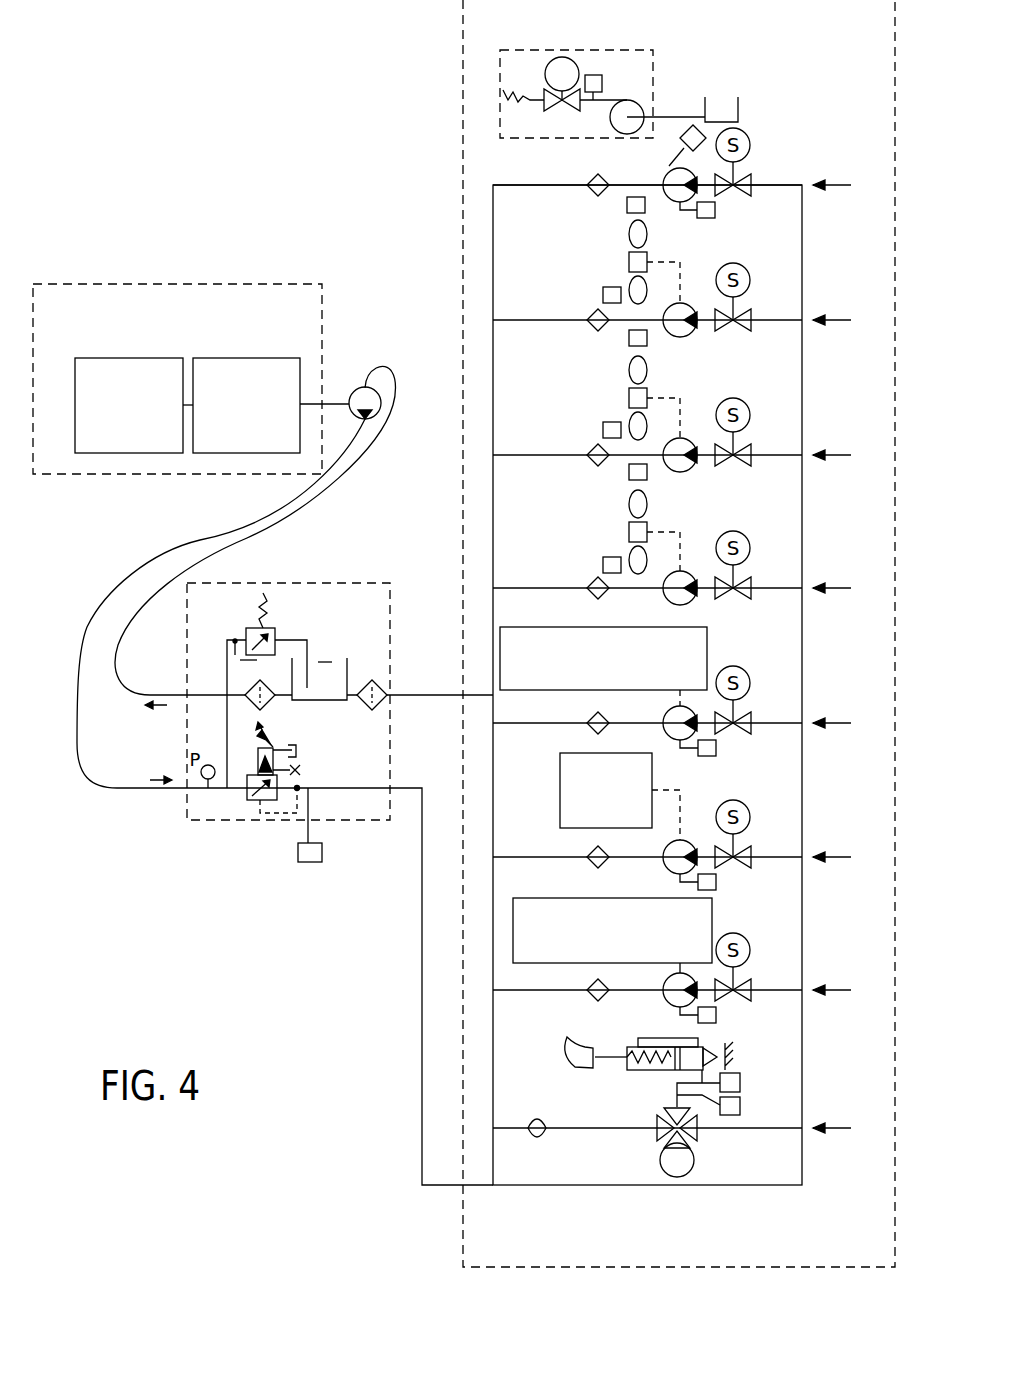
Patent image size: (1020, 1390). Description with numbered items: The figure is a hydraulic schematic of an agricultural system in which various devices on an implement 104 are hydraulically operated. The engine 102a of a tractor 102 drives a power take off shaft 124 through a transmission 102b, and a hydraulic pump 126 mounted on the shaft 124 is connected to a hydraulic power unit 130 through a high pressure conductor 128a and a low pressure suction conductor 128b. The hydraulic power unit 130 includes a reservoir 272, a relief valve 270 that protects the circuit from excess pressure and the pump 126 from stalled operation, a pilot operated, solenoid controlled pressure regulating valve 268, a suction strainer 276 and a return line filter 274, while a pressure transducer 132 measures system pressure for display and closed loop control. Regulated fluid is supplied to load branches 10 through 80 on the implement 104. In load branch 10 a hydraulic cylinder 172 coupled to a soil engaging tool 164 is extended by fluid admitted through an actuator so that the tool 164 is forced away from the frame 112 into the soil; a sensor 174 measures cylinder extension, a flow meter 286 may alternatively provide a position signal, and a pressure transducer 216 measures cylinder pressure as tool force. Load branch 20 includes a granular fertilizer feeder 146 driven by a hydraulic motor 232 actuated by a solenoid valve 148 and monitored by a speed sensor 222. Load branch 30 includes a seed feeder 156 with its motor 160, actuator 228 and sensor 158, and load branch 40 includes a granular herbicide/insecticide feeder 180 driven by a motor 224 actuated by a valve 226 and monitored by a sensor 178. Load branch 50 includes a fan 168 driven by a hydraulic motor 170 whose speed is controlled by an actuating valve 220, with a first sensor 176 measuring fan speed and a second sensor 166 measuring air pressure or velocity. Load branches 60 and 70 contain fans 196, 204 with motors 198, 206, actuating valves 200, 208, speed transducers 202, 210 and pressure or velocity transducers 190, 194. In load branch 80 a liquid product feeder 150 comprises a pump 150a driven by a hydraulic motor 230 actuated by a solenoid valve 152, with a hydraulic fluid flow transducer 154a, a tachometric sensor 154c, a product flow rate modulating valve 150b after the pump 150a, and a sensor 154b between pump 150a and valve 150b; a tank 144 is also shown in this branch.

The load branch 10 is at (692, 1128).
The load branch 20 is at (690, 991).
The load branch 30 is at (690, 858).
The load branch 40 is at (690, 724).
The load branch 50 is at (690, 589).
The load branch 60 is at (690, 456).
The load branch 70 is at (690, 321).
The load branch 80 is at (690, 186).
The tractor 102 is at (158, 334).
The engine 102a is at (105, 358).
The transmission 102b is at (253, 358).
The implement 104 is at (462, 1237).
The frame 112 is at (729, 1054).
The power take off (PTO) shaft 124 is at (333, 402).
The hydraulic pump 126 is at (352, 388).
The high pressure (output) conductor 128a is at (148, 553).
The low pressure (input, or suction) conductor 128b is at (248, 537).
The hydraulic power unit (HPU) 130 is at (390, 597).
The pressure transducer 132 is at (297, 852).
The reservoir 144 is at (740, 108).
The granular fertilizer feeder 146 is at (712, 930).
The solenoid valve 148 is at (750, 987).
The liquid product feeder 150 is at (583, 48).
The pump 150a is at (612, 131).
The product flow rate modulating valve 150b is at (548, 62).
The solenoid valve 152 is at (750, 184).
The hydraulic fluid flow transducer 154a is at (715, 210).
The sensor 154b is at (603, 85).
The tachometric sensor 154c is at (681, 143).
The seed feeder 156 is at (560, 790).
The sensor 158 is at (717, 882).
The motor 160 is at (668, 848).
The soil engaging tool 164 is at (568, 1060).
The second sensor 166 is at (603, 565).
The fan 168 is at (628, 503).
The hydraulic motor 170 is at (693, 572).
The hydraulic cylinder 172 is at (653, 1072).
The sensor 174 is at (668, 1038).
The first sensor 176 is at (648, 475).
The sensor 178 is at (717, 748).
The granular herbicide/insecticide feeder 180 is at (707, 657).
The pressure or velocity transducer 190 is at (603, 430).
The pressure or velocity transducer 194 is at (603, 295).
The fan 196 is at (628, 368).
The motor 198 is at (693, 438).
The actuating valve 200 is at (750, 452).
The speed transducer 202 is at (648, 340).
The fan 204 is at (628, 233).
The motor 206 is at (693, 303).
The actuating valve 208 is at (750, 317).
The speed transducer 210 is at (627, 205).
The sensor 216 is at (740, 1078).
The actuating valve 220 is at (750, 585).
The sensor 222 is at (717, 1015).
The motor 224 is at (667, 711).
The valve 226 is at (750, 720).
The actuator 228 is at (750, 855).
The hydraulic motor 230 is at (669, 203).
The hydraulic motor 232 is at (667, 978).
The pressure regulating valve (PRV) 268 is at (305, 753).
The relief valve 270 is at (292, 635).
The reservoir 272 is at (349, 662).
The return line filter 274 is at (382, 686).
The suction strainer 276 is at (268, 707).
The flow meter 286 is at (740, 1105).